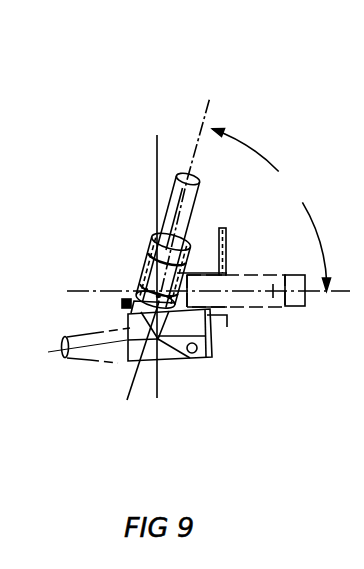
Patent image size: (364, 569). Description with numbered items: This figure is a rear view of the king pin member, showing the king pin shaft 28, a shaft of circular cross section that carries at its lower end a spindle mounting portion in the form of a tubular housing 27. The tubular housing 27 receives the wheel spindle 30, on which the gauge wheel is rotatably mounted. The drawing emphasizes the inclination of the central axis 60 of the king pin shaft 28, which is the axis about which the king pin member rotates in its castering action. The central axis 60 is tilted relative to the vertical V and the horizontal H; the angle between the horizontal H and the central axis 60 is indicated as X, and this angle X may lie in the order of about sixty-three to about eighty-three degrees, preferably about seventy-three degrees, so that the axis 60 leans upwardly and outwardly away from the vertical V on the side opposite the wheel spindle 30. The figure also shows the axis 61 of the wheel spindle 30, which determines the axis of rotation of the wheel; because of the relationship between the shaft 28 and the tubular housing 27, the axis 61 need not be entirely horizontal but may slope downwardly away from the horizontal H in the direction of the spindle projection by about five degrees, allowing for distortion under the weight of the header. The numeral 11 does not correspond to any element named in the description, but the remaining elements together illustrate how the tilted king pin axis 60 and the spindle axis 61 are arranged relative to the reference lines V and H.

The central axis 60 is at (210, 98).
The king pin shaft 28 is at (168, 194).
The assembly 11 is at (294, 140).
The tubular housing 27 is at (188, 362).
The wheel spindle 30 is at (108, 363).
The axis of the wheel spindle 61 is at (87, 363).
The vertical V is at (157, 177).
The horizontal H is at (93, 291).
The angle X is at (271, 210).